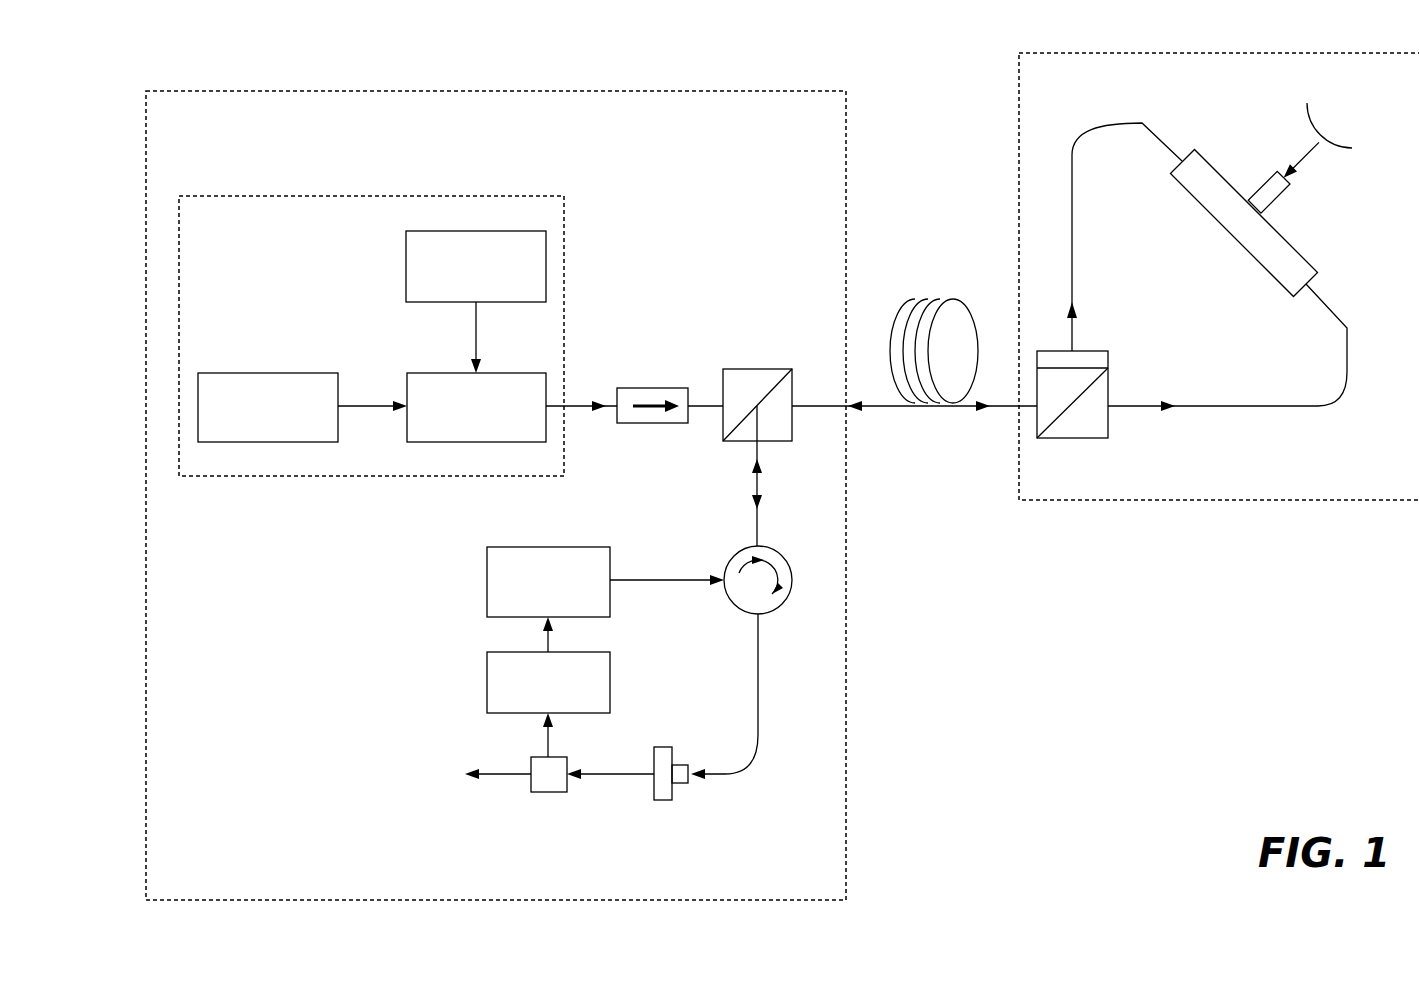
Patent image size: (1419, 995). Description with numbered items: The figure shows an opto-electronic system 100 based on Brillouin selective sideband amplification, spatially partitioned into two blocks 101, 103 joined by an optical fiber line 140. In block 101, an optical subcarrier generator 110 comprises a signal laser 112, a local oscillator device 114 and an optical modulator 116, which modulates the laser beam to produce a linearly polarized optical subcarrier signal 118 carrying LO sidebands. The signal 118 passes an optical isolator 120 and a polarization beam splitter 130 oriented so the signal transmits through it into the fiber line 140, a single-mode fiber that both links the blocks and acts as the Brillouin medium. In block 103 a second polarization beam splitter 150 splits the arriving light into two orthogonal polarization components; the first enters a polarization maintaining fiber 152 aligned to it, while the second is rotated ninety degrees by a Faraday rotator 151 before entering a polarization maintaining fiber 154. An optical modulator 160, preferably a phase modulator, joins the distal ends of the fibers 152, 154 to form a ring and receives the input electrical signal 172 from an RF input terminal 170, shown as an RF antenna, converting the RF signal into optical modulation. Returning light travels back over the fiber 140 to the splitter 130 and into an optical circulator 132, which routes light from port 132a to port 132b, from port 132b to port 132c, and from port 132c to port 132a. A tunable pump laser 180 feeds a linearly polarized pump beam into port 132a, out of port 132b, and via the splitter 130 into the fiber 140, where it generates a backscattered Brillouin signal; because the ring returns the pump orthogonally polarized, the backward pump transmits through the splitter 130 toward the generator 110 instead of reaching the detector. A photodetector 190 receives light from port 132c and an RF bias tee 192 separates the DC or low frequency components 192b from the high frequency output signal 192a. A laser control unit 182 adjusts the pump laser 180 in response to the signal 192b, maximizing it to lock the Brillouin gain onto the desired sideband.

The opto-electronic system 100 is at (1080, 656).
The first block 101 is at (245, 827).
The second block 103 is at (1090, 101).
The optical subcarrier generator 110 is at (441, 196).
The signal laser 112 is at (268, 373).
The local oscillator device 114 is at (406, 265).
The optical modulator 116 is at (407, 373).
The optical subcarrier signal 118 is at (594, 412).
The optical isolator 120 is at (660, 388).
The polarization beam splitter 130 is at (764, 369).
The optical circulator 132 is at (792, 578).
The circulator first port 132a is at (667, 567).
The circulator second port 132b is at (733, 493).
The circulator third port 132c is at (753, 696).
The optical fiber line 140 is at (935, 298).
The second polarization beam splitter 150 is at (1074, 438).
The 90-degree Faraday rotator 151 is at (1103, 351).
The polarization maintaining fiber 152 is at (1262, 408).
The polarization maintaining fiber 154 is at (1072, 196).
The optical modulator 160 is at (1238, 246).
The RF input terminal 170 is at (1352, 150).
The input electrical signal 172 is at (1307, 153).
The pump laser 180 is at (487, 580).
The laser control unit 182 is at (487, 680).
The photodetector 190 is at (663, 800).
The RF bias tee 192 is at (548, 792).
The processed output electrical signal 192a is at (492, 776).
The DC or low frequency components 192b is at (548, 748).